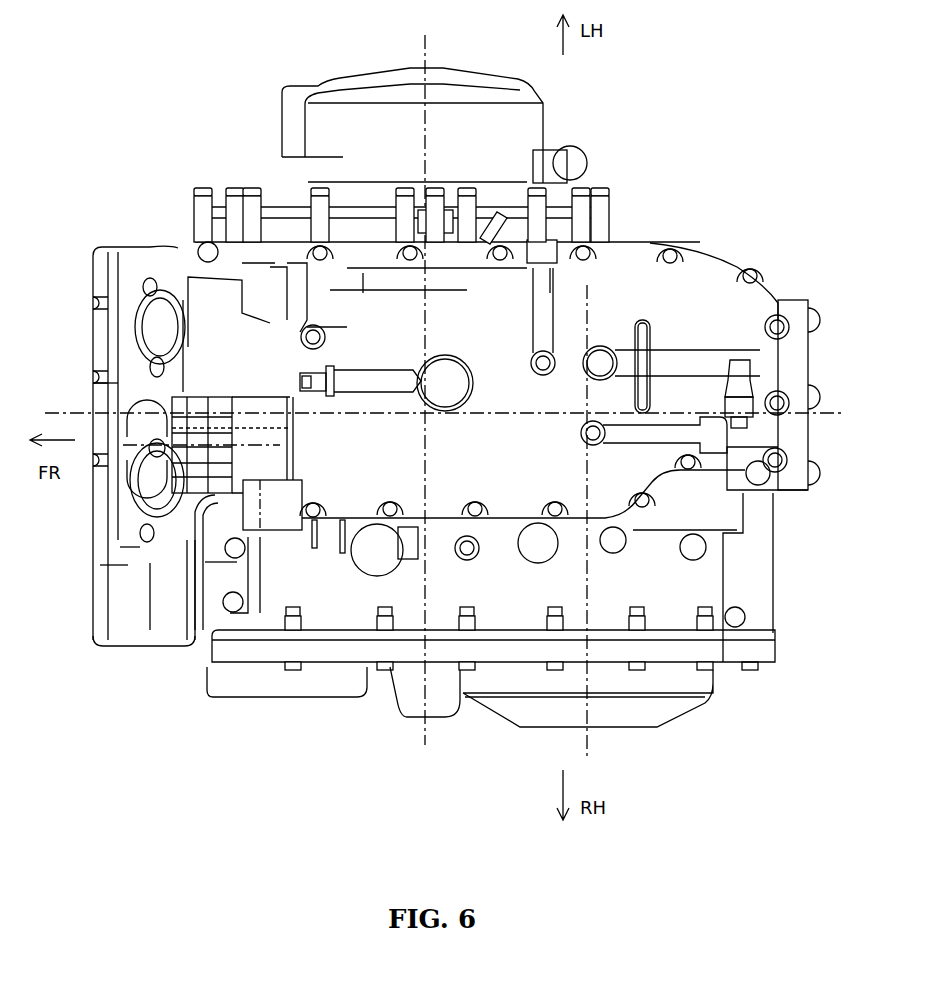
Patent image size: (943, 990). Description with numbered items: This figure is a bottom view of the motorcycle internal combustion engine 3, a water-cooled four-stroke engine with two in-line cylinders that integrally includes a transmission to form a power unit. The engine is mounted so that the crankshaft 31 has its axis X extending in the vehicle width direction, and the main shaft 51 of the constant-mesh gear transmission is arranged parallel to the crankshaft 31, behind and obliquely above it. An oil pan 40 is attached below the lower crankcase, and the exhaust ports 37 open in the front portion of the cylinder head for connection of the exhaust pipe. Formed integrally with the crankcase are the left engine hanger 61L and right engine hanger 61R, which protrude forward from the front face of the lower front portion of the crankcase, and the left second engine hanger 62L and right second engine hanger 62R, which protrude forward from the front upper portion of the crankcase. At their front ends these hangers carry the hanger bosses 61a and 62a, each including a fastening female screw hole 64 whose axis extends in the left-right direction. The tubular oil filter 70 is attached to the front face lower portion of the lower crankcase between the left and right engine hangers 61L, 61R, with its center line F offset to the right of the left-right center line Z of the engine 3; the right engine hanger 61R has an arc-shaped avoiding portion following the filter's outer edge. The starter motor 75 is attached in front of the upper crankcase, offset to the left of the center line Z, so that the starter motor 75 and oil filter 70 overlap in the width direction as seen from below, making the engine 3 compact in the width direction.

The internal combustion engine 3 is at (642, 77).
The oil pan 40 is at (611, 278).
The exhaust ports 37 is at (143, 298).
The starter motor 75 is at (203, 297).
The left second engine hanger 62L is at (163, 367).
The right second engine hanger 62R is at (133, 477).
The hanger boss 62a is at (98, 443).
The fastening female screw hole 64 is at (135, 377).
The oil filter 70 is at (190, 458).
The center line of the oil filter F is at (328, 443).
The hanger boss 61a is at (204, 248).
The left engine hanger 61L is at (326, 333).
The right engine hanger 61R is at (302, 463).
The left-right center line of the internal combustion engine Z is at (477, 413).
The crankshaft 31 is at (427, 745).
The axis of the crankshaft X is at (460, 859).
The main shaft 51 is at (590, 725).